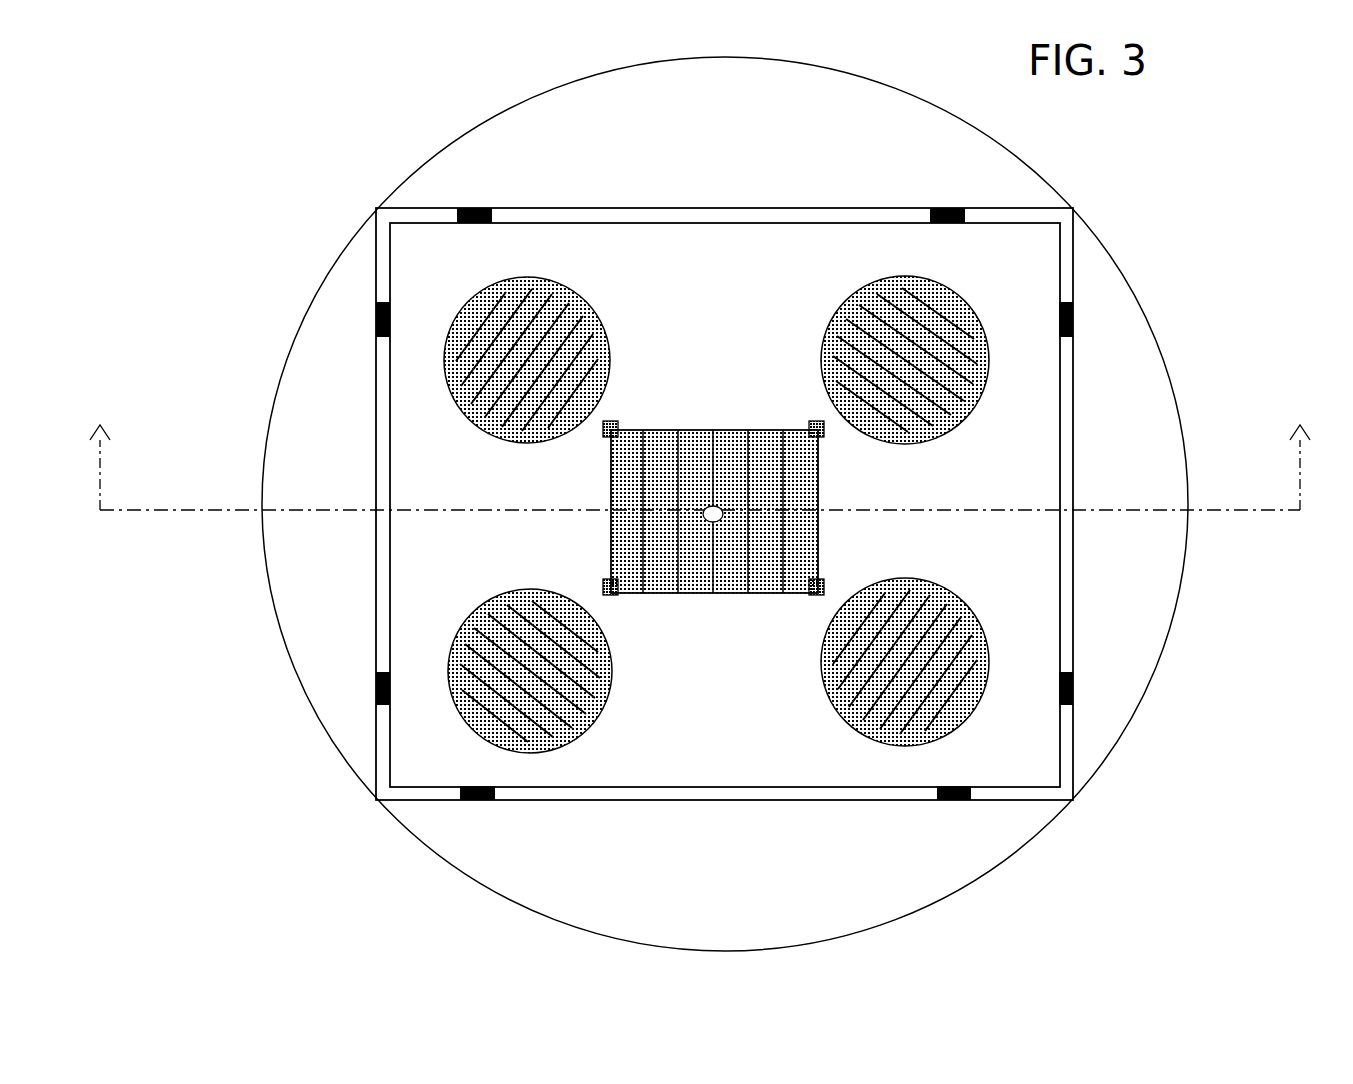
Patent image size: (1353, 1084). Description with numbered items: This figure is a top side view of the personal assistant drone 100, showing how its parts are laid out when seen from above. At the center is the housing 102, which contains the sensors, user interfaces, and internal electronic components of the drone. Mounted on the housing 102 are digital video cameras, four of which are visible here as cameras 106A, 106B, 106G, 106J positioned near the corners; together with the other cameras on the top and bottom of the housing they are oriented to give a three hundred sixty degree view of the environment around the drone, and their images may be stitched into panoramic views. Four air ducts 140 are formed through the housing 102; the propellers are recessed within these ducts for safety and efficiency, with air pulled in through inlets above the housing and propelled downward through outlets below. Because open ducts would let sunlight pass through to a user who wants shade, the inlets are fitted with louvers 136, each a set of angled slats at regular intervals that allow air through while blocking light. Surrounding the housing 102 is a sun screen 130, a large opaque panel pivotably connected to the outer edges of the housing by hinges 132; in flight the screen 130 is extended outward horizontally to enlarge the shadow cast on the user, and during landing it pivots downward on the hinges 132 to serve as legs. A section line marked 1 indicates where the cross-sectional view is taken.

The personal assistant drone 100 is at (303, 784).
The housing 102 is at (1025, 477).
The digital video camera 106A is at (822, 580).
The digital video camera 106B is at (822, 438).
The digital video camera 106G is at (606, 580).
The digital video camera 106J is at (603, 438).
The sun screen 130 is at (555, 158).
The hinge 132 is at (947, 206).
The inlet louvers 136 is at (586, 376).
The air duct 140 is at (580, 291).
The section line 1 is at (700, 447).